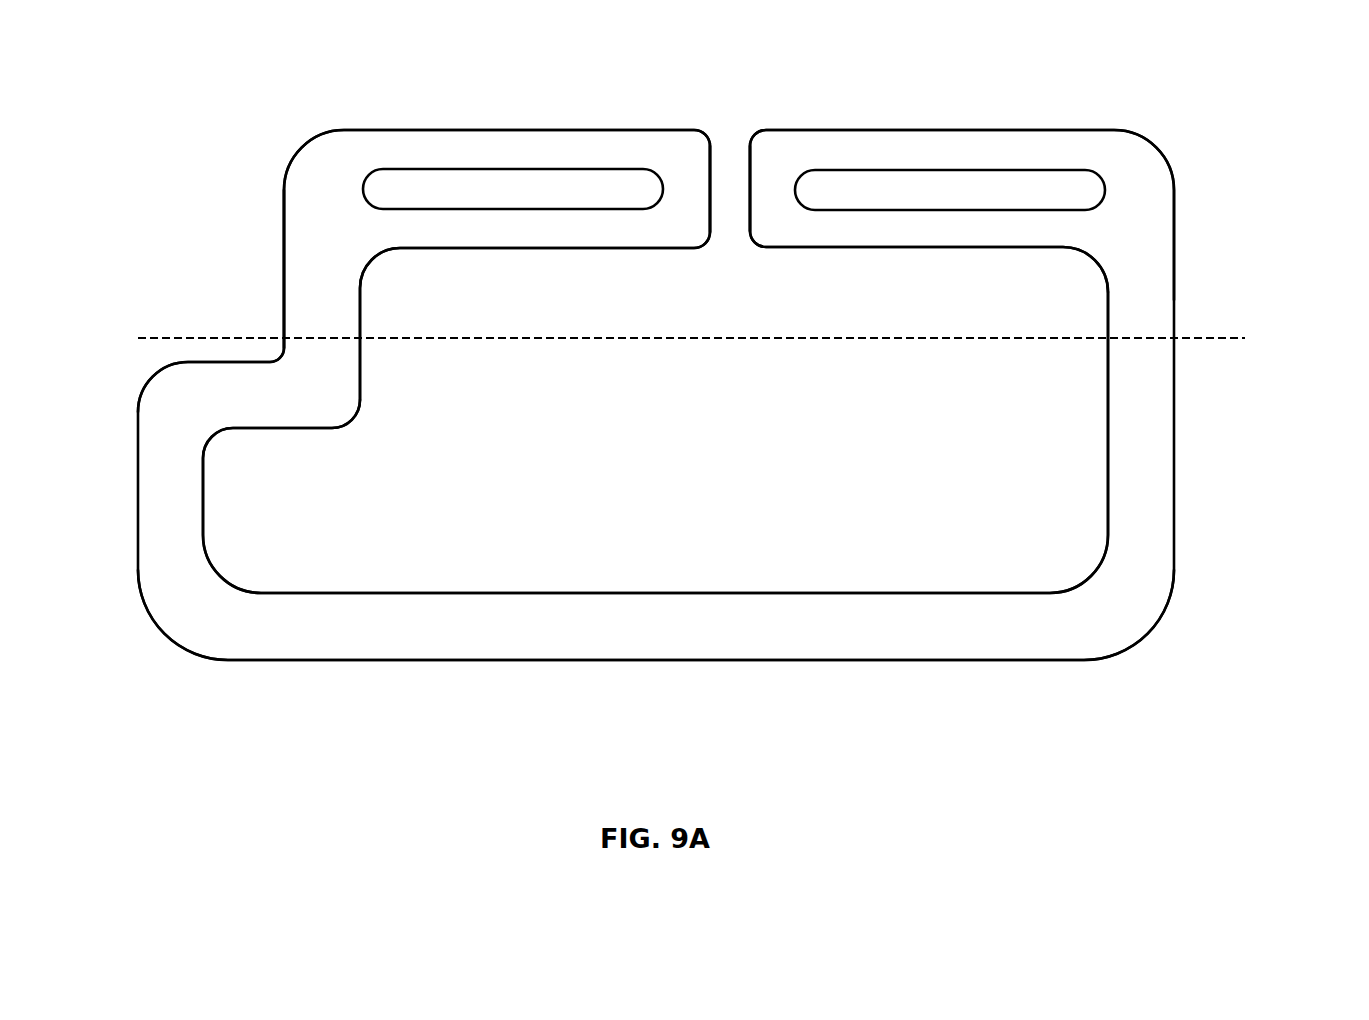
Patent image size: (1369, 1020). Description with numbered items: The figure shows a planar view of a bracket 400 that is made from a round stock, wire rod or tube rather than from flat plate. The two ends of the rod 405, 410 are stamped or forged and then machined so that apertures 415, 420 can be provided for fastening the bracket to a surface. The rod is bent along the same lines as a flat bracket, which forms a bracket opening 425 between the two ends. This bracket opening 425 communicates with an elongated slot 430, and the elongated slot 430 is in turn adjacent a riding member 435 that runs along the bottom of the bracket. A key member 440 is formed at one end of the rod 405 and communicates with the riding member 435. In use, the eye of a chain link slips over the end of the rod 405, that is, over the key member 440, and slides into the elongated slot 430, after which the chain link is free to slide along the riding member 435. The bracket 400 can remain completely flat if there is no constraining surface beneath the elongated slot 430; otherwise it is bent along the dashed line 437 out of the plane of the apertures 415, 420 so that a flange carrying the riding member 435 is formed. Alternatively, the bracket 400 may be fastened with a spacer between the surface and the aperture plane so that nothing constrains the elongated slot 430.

The bracket 400 is at (1106, 699).
The end of the rod 405 is at (680, 162).
The end of the rod 410 is at (777, 162).
The aperture 415 is at (547, 178).
The aperture 420 is at (968, 179).
The bracket opening 425 is at (740, 197).
The elongated slot 430 is at (992, 517).
The riding member 435 is at (450, 642).
The line 437 is at (1220, 323).
The key member 440 is at (306, 284).